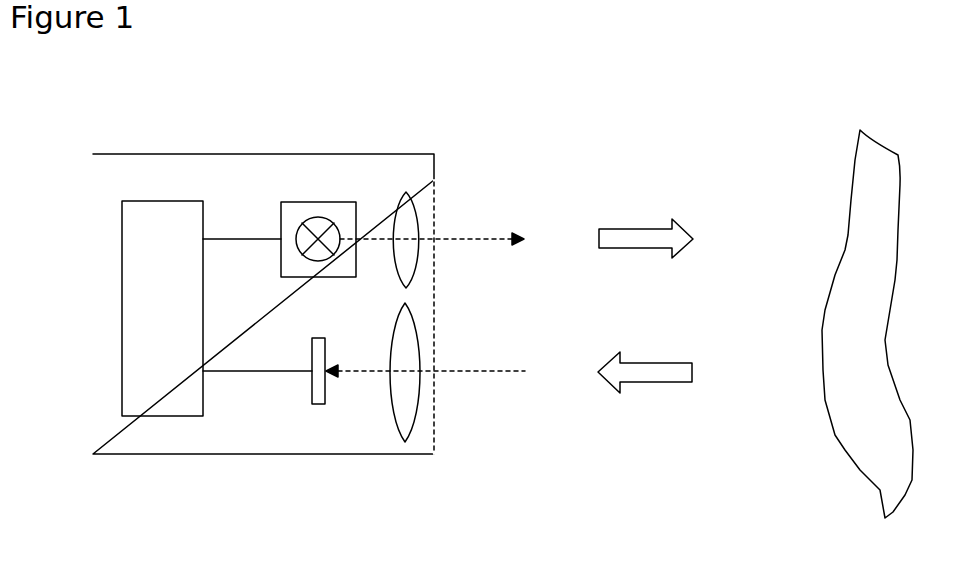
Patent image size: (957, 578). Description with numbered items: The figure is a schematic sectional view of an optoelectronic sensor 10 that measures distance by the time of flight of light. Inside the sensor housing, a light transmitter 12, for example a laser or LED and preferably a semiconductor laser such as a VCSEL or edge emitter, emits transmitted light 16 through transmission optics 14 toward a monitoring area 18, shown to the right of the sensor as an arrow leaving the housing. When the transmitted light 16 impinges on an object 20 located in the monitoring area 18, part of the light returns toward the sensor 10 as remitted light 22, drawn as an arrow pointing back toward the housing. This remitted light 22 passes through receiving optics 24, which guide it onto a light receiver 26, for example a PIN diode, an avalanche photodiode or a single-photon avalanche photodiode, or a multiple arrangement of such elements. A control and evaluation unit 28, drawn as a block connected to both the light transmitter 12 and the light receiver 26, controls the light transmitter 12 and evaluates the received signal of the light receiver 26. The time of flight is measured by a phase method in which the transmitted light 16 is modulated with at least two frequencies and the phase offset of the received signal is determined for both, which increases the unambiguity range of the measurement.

The optoelectronic sensor 10 is at (507, 72).
The light transmitter 12 is at (316, 207).
The transmission optics 14 is at (416, 198).
The transmitted light 16 is at (633, 235).
The monitoring area 18 is at (723, 143).
The object 20 is at (843, 375).
The remitted light 22 is at (633, 373).
The receiving optics 24 is at (412, 397).
The light receiver 26 is at (305, 403).
The control and evaluation unit 28 is at (153, 345).